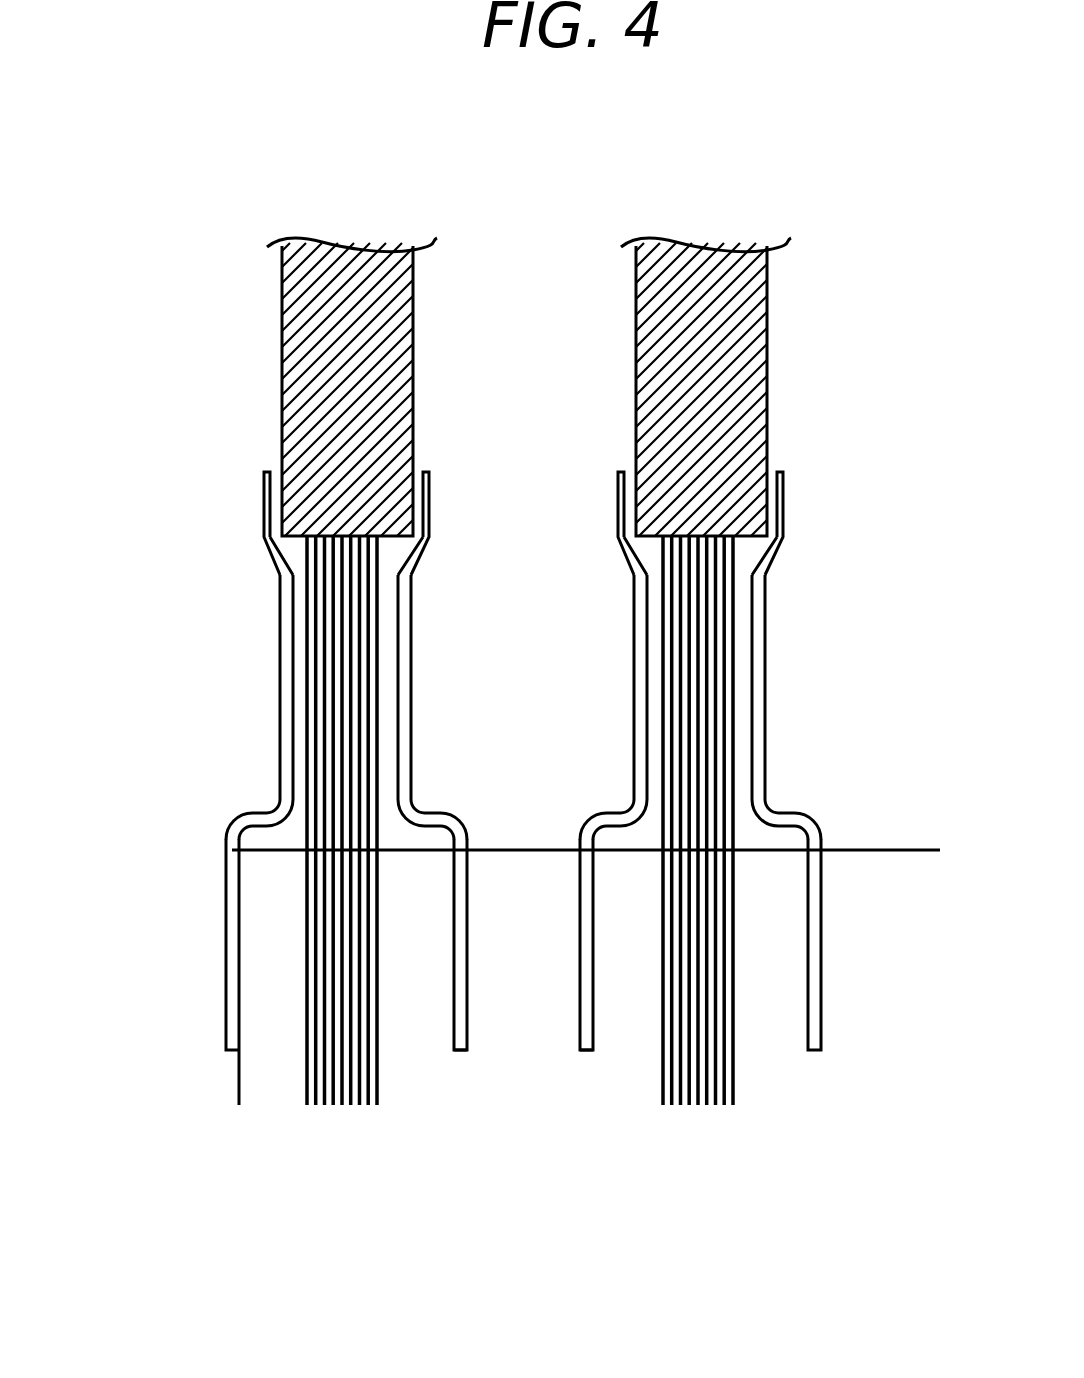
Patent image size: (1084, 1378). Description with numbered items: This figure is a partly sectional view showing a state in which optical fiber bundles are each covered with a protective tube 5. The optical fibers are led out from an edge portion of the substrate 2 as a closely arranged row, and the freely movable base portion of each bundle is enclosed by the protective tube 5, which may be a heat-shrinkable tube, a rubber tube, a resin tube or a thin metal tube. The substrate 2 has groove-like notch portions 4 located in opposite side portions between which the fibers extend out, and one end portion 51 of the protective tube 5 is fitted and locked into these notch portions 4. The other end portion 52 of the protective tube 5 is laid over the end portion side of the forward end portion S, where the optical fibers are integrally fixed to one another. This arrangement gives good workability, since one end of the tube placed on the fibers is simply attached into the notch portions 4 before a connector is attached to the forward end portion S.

The forward end portion S is at (300, 307).
The other end portion of the protective tube 52 is at (273, 503).
The protective tube 5 is at (287, 645).
The one end portion of the protective tube 51 is at (458, 920).
The substrate 2 is at (852, 877).
The notch portions 4 is at (468, 1057).